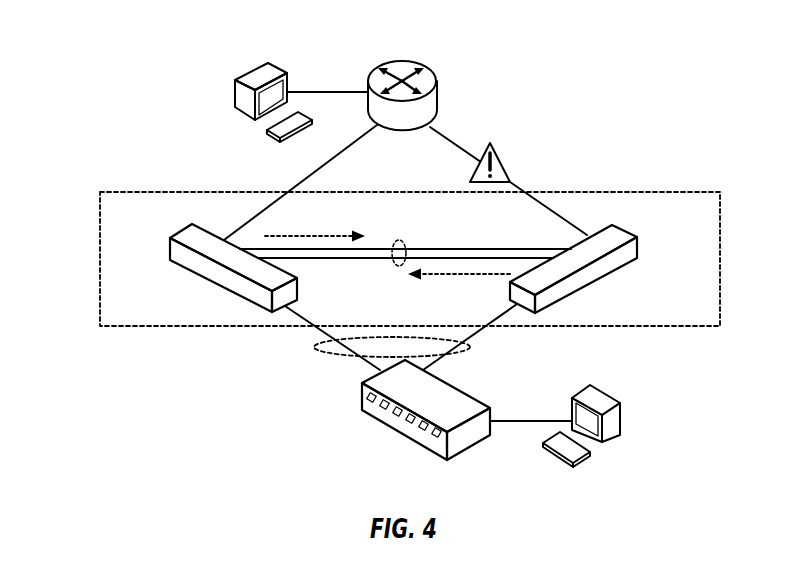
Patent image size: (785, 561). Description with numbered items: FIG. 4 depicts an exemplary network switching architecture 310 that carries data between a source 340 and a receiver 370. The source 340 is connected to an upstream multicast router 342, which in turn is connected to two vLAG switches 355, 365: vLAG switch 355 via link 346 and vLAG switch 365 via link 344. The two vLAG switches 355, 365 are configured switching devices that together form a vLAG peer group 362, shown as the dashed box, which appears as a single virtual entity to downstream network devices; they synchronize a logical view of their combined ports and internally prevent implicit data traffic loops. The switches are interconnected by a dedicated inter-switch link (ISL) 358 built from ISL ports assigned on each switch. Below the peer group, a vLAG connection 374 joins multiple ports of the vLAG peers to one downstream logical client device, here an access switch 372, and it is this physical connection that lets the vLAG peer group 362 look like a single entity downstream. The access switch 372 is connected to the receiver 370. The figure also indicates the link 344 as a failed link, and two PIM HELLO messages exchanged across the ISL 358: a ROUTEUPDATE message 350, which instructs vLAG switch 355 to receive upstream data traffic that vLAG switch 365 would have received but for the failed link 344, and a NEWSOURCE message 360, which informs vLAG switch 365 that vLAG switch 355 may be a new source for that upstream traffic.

The network switching architecture 310 is at (56, 124).
The source 340 is at (236, 79).
The multicast router 342 is at (437, 74).
The link 344 is at (443, 136).
The link 346 is at (305, 178).
The ROUTEUPDATE message 350 is at (453, 276).
The vLAG switch 355 is at (170, 237).
The inter-switch link (ISL) 358 is at (400, 241).
The NEWSOURCE message 360 is at (297, 235).
The vLAG peer group 362 is at (182, 316).
The vLAG switch 365 is at (637, 237).
The receiver 370 is at (620, 400).
The access switch 372 is at (370, 421).
The vLAG connection 374 is at (315, 348).